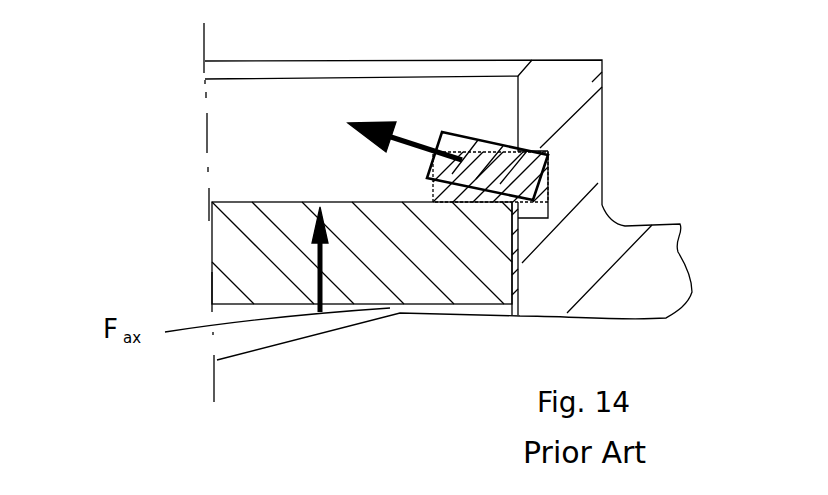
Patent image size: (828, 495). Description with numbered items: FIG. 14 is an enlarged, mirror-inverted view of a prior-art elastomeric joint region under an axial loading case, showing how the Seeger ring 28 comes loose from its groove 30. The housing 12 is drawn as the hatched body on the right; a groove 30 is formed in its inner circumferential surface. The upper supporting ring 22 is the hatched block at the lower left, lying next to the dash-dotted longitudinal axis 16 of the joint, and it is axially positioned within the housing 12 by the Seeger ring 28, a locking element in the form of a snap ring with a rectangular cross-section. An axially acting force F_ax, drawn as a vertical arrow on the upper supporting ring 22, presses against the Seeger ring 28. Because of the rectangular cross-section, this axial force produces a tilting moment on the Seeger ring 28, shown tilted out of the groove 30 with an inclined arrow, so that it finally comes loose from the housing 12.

The housing 12 is at (604, 73).
The longitudinal axis 16 is at (207, 140).
The upper supporting ring 22 is at (242, 255).
The Seeger ring 28 is at (548, 153).
The groove 30 is at (600, 190).